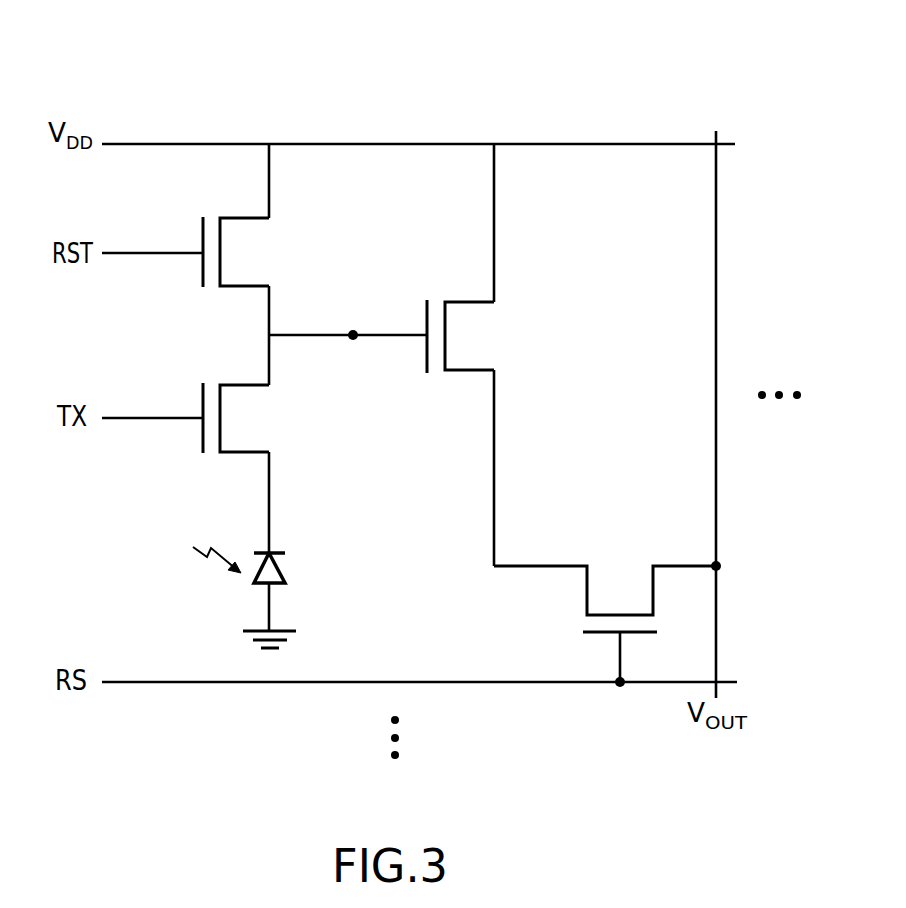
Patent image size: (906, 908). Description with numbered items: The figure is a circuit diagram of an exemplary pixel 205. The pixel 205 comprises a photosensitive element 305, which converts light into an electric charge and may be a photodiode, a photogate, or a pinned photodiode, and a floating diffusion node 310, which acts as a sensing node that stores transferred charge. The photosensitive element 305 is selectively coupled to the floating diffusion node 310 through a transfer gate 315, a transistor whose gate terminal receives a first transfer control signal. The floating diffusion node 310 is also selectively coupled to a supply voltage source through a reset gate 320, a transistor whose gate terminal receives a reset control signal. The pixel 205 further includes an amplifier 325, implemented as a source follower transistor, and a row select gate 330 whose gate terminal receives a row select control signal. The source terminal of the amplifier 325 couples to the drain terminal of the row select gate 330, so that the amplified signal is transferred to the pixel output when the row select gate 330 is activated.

The pixel 205 is at (688, 98).
The photosensitive element 305 is at (285, 572).
The floating diffusion node 310 is at (355, 330).
The transfer gate 315 is at (259, 423).
The reset gate 320 is at (258, 250).
The amplifier 325 is at (485, 333).
The row select gate 330 is at (620, 573).